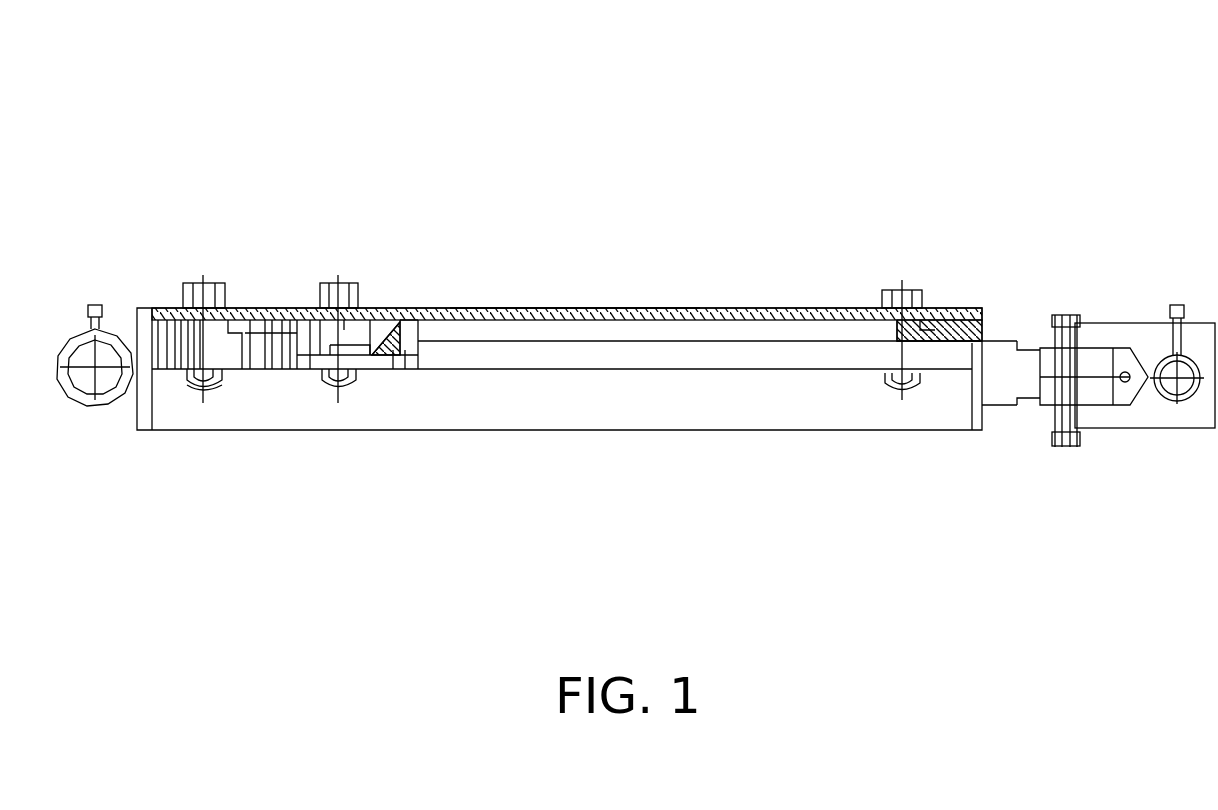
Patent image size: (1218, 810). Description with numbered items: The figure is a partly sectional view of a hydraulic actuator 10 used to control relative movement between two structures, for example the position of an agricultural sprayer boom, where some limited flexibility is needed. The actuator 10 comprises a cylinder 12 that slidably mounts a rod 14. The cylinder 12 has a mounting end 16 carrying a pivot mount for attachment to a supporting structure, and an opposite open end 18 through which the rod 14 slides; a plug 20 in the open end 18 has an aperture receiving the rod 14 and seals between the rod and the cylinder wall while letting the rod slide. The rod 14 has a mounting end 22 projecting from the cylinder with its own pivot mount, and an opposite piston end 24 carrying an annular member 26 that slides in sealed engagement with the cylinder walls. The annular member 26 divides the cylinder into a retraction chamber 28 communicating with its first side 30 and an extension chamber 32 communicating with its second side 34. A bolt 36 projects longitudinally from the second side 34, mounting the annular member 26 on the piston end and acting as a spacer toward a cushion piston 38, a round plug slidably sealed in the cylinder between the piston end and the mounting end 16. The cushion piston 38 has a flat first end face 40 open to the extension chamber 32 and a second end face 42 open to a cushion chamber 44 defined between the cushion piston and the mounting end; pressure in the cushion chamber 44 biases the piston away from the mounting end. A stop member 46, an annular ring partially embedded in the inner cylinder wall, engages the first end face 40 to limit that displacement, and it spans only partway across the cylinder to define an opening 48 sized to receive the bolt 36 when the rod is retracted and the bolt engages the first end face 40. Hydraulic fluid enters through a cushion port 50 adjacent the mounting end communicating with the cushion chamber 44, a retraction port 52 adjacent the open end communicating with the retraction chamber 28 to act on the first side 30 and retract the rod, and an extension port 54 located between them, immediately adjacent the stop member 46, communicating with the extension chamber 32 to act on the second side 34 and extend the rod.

The hydraulic actuator 10 is at (562, 86).
The cylinder 12 is at (521, 430).
The rod 14 is at (677, 360).
The mounting end 16 is at (113, 305).
The open end 18 is at (985, 325).
The plug 20 is at (940, 320).
The mounting end 22 is at (1093, 390).
The piston end 24 is at (415, 372).
The annular member 26 is at (412, 308).
The retraction chamber 28 is at (560, 324).
The first side 30 is at (455, 308).
The extension chamber 32 is at (318, 362).
The second side 34 is at (368, 308).
The bolt 36 is at (372, 375).
The cushion piston 38 is at (262, 308).
The first end face 40 is at (338, 400).
The second end face 42 is at (200, 380).
The cushion chamber 44 is at (206, 349).
The stop member 46 is at (312, 308).
The opening 48 is at (296, 308).
The cushion port 50 is at (181, 285).
The retraction port 52 is at (882, 290).
The extension port 54 is at (336, 283).